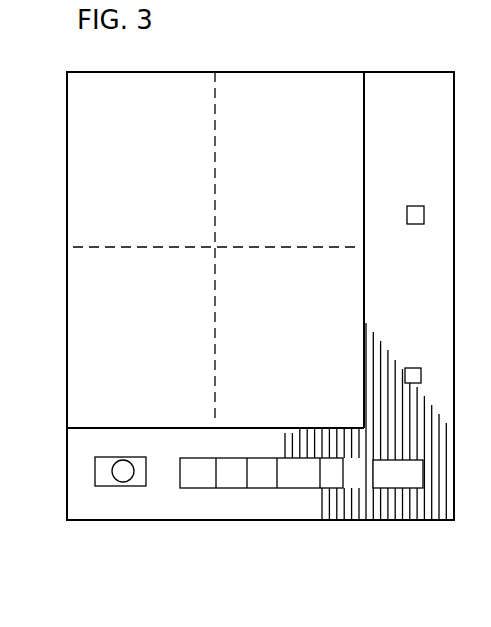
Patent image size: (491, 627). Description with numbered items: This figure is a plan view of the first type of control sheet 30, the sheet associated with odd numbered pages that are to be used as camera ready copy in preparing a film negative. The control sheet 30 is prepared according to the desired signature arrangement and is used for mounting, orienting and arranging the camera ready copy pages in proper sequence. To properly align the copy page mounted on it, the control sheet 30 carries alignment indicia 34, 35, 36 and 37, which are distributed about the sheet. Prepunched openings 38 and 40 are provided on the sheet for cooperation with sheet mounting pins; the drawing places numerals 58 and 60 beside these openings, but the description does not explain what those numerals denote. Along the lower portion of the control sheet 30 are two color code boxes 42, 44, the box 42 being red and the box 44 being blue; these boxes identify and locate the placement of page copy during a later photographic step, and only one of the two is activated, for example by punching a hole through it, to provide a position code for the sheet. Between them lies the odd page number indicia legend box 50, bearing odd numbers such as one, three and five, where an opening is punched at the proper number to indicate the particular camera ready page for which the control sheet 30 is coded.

The control sheet 30 is at (152, 522).
The alignment indicia 34 is at (89, 428).
The alignment indicia 35 is at (82, 132).
The alignment indicia 36 is at (363, 125).
The alignment indicia 37 is at (167, 71).
The prepunched opening 38 is at (424, 212).
The prepunched opening 40 is at (421, 374).
The color code box 42 is at (118, 478).
The color code box 44 is at (390, 480).
The odd page number indicia legend box 50 is at (252, 488).
The position indicator 58 is at (480, 236).
The position indicator 60 is at (481, 406).